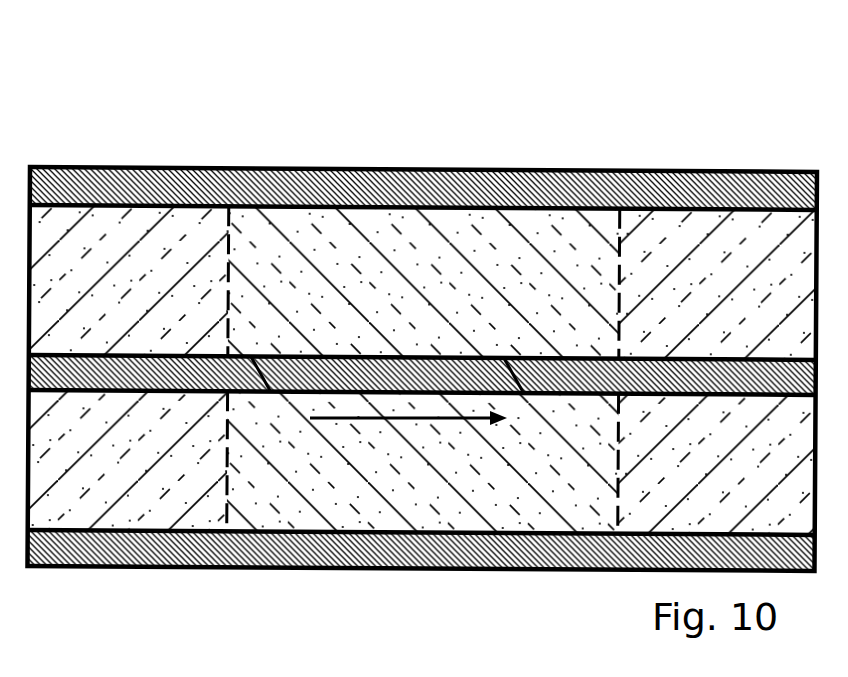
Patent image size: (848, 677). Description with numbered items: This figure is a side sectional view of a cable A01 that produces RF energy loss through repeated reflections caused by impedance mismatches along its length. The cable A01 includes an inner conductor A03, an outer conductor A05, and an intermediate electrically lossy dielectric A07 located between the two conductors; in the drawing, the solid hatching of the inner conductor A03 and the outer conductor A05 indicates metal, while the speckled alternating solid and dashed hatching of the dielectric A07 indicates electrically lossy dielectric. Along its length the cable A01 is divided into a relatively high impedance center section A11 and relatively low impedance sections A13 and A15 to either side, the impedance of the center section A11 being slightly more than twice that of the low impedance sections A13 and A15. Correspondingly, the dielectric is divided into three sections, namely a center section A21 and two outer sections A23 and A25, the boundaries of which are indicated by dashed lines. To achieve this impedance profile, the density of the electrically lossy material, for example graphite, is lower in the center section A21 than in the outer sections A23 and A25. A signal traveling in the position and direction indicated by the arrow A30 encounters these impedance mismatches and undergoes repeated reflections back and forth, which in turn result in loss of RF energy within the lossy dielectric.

The cable A01 is at (120, 50).
The outer conductor A05 is at (371, 200).
The inner conductor A03 is at (373, 384).
The intermediate electrically lossy dielectric A07 is at (209, 292).
The center section A11 is at (386, 150).
The low impedance section A13 is at (162, 150).
The low impedance section A15 is at (686, 151).
The center section of dielectric A21 is at (354, 513).
The outer section of dielectric A23 is at (129, 477).
The outer section of dielectric A25 is at (698, 489).
The arrow A30 is at (333, 421).